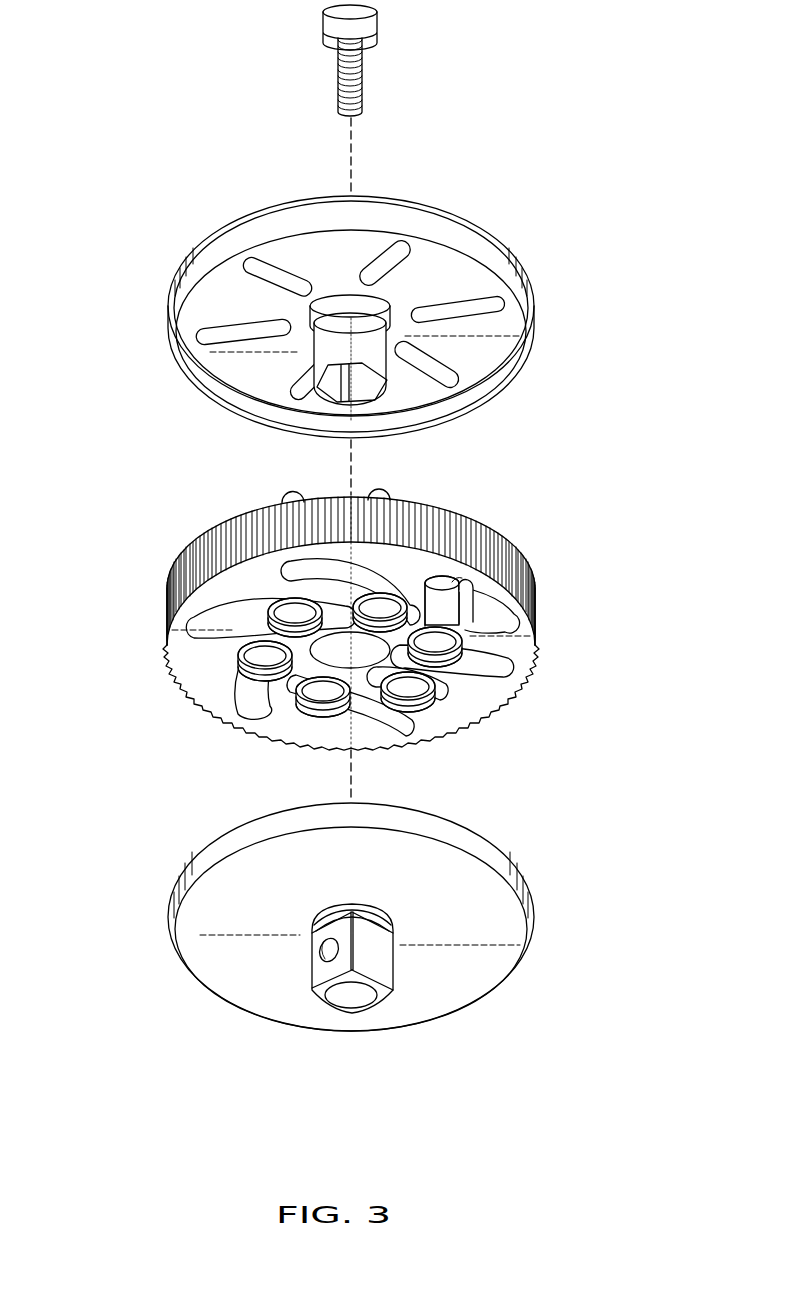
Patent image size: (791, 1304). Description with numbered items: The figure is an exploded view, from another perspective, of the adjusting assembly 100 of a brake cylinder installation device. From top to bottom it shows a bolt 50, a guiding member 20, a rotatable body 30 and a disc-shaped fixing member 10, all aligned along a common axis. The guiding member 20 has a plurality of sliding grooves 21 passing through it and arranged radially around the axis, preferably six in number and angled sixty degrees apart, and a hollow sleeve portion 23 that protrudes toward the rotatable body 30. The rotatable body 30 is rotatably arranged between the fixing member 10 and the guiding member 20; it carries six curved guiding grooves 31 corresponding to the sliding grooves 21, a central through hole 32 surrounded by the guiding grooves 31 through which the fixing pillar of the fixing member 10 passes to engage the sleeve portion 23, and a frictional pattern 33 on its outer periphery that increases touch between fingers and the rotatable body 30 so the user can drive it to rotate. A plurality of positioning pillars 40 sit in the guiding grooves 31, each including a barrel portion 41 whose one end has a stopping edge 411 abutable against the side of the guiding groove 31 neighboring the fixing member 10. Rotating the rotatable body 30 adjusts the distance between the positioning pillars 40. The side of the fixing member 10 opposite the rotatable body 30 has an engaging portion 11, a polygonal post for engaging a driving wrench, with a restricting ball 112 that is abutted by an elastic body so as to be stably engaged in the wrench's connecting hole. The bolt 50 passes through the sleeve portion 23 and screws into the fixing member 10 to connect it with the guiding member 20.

The adjusting assembly 100 is at (107, 123).
The bolt 50 is at (280, 39).
The guiding member 20 is at (288, 334).
The sliding grooves 21 is at (206, 342).
The sleeve portion 23 is at (318, 355).
The rotatable body 30 is at (332, 642).
The frictional pattern 33 is at (168, 598).
The guiding grooves 31 is at (462, 681).
The through hole 32 is at (333, 648).
The positioning pillars 40 is at (420, 611).
The barrel portion 41 is at (513, 602).
The stopping edge 411 is at (497, 660).
The fixing member 10 is at (295, 947).
The engaging portion 11 is at (265, 998).
The restricting ball 112 is at (322, 948).